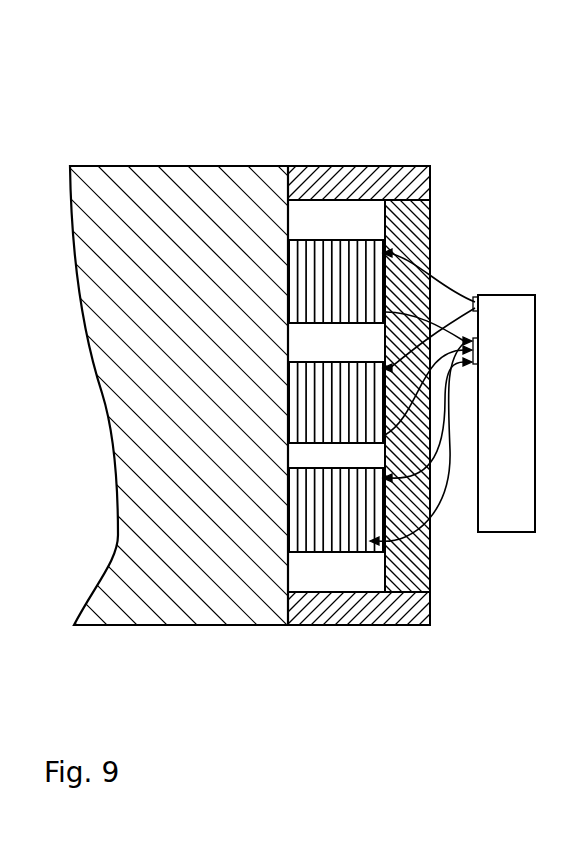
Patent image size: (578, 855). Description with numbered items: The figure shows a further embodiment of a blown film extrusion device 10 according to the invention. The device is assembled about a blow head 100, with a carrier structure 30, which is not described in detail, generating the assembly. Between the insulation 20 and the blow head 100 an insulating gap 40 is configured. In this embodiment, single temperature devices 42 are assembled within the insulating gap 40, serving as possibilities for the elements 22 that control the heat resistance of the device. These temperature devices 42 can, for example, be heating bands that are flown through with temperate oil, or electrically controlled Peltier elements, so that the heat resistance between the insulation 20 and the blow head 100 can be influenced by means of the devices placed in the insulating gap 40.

The blown film extrusion device 10 is at (362, 126).
The insulation 20 is at (480, 222).
The element for controlling the heat resistance 22 is at (430, 268).
The carrier structure 30 is at (299, 166).
The insulating gap 40 is at (330, 218).
The temperature device 42 is at (374, 544).
The blow head 100 is at (122, 173).